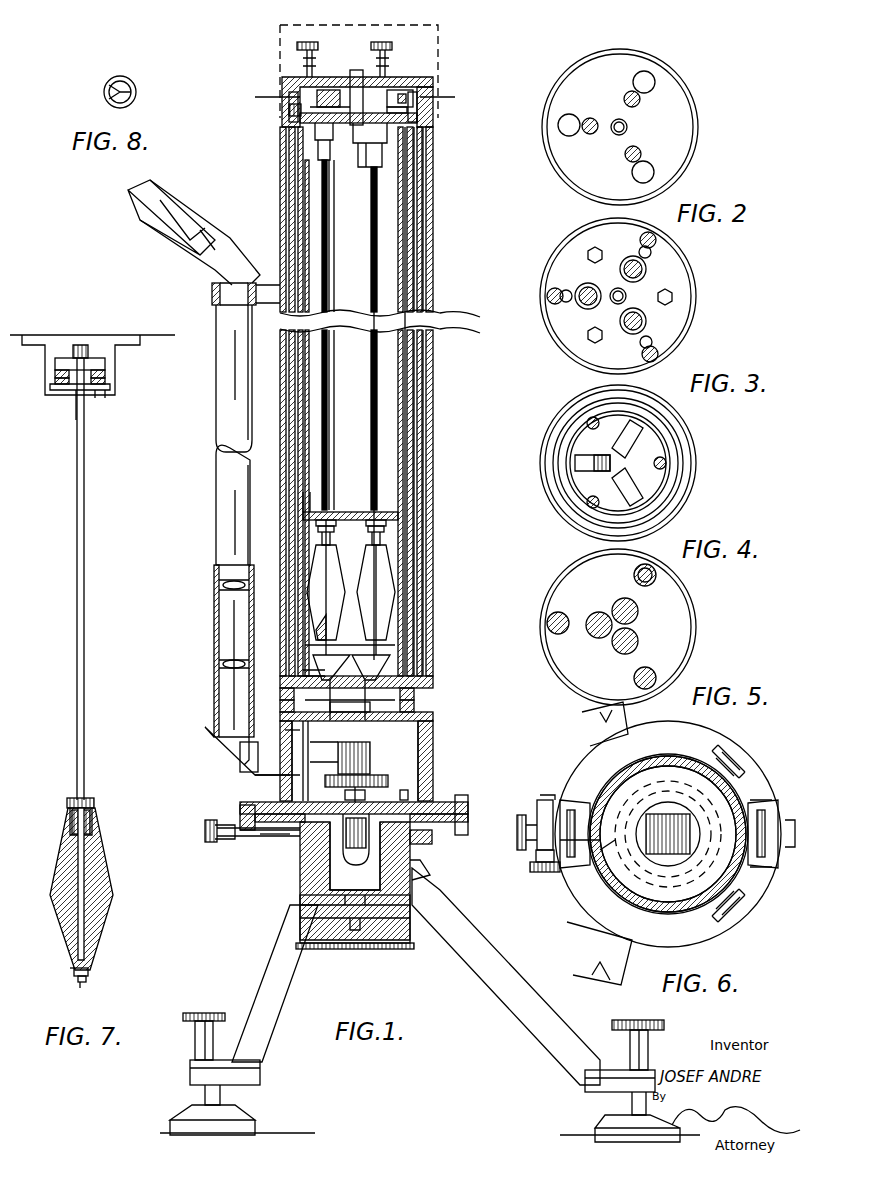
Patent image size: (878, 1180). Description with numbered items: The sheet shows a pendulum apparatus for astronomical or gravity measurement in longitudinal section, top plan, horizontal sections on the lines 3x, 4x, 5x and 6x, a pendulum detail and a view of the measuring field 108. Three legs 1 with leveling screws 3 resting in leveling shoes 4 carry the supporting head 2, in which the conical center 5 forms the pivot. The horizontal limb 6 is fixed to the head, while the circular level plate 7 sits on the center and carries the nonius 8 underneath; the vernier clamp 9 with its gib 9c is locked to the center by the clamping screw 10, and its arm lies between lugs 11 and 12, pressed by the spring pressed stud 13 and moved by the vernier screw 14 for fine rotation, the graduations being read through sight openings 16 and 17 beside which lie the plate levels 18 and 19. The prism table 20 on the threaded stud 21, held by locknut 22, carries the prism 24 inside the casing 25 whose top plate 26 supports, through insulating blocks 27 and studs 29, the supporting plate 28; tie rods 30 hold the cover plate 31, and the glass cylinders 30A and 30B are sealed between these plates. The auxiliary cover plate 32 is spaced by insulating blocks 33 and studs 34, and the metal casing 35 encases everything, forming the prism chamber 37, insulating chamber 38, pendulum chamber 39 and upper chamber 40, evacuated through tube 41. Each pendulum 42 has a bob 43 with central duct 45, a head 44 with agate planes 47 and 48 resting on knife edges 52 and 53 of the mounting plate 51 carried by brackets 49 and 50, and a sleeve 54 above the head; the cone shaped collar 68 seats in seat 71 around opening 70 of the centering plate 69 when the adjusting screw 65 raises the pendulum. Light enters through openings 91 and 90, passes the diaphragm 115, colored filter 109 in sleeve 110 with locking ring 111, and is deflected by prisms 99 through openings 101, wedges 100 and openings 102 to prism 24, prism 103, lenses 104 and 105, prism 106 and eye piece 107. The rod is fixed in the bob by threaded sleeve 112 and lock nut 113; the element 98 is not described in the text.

In FIG. 1, the legs 1 is at (312, 978).
In FIG. 1, the supporting head 2 is at (420, 870).
In FIG. 1, the leveling screw 3 is at (208, 1012).
In FIG. 1, the leveling shoes 4 is at (235, 1112).
In FIG. 1, the conical center 5 is at (330, 880).
In FIG. 1, the horizontal limb 6 is at (266, 822).
In FIG. 6, the horizontal limb 6 is at (580, 810).
In FIG. 1, the circular level plate 7 is at (465, 805).
In FIG. 6, the circular level plate 7 is at (580, 768).
In FIG. 1, the nonius 8 is at (262, 838).
In FIG. 6, the nonius 8 is at (560, 860).
In FIG. 1, the vernier clamp 9 is at (280, 840).
In FIG. 1, the gib 9c is at (240, 800).
In FIG. 1, the clamping screw 10 is at (248, 838).
In FIG. 6, the clamping screw 10 is at (590, 880).
In FIG. 6, the lug 11 is at (540, 812).
In FIG. 6, the lug 12 is at (536, 856).
In FIG. 6, the spring pressed stud 13 is at (520, 820).
In FIG. 6, the vernier screw 14 is at (535, 870).
In FIG. 1, the sight opening 16 is at (250, 798).
In FIG. 6, the sight opening 16 is at (610, 848).
In FIG. 1, the sight opening 17 is at (445, 783).
In FIG. 6, the sight opening 17 is at (765, 800).
In FIG. 6, the plate level 18 is at (740, 760).
In FIG. 6, the plate level 19 is at (745, 905).
In FIG. 1, the prism table 20 is at (400, 770).
In FIG. 6, the prism table 20 is at (672, 795).
In FIG. 1, the central threaded stud 21 is at (340, 830).
In FIG. 1, the locknut 22 is at (365, 796).
In FIG. 1, the prism 24 is at (392, 746).
In FIG. 6, the prism 24 is at (655, 815).
In FIG. 1, the cylindrical shell or casing 25 is at (434, 748).
In FIG. 6, the cylindrical shell or casing 25 is at (690, 770).
In FIG. 1, the plate 26 is at (434, 718).
In FIG. 1, the insulating blocks 27 is at (283, 692).
In FIG. 5, the insulating blocks 27 is at (655, 580).
In FIG. 1, the supporting plate 28 is at (434, 682).
In FIG. 1, the studs 29 is at (283, 706).
In FIG. 5, the studs 29 is at (658, 573).
In FIG. 1, the tie rods 30 is at (410, 560).
In FIG. 3, the tie rods 30 is at (592, 248).
In FIG. 4, the tie rods 30 is at (590, 420).
In FIG. 1, the glass cylinder 30A is at (428, 220).
In FIG. 4, the glass cylinder 30A is at (675, 432).
In FIG. 1, the glass cylinder 30B is at (433, 238).
In FIG. 4, the glass cylinder 30B is at (678, 448).
In FIG. 1, the cover plate 31 is at (292, 120).
In FIG. 1, the auxiliary cover plate 32 is at (285, 80).
In FIG. 1, the insulating blocks 33 is at (290, 95).
In FIG. 3, the insulating blocks 33 is at (658, 240).
In FIG. 1, the studs 34 is at (290, 108).
In FIG. 3, the studs 34 is at (652, 252).
In FIG. 1, the cylindrical metal casing 35 is at (380, 401).
In FIG. 3, the cylindrical metal casing 35 is at (695, 275).
In FIG. 4, the cylindrical metal casing 35 is at (690, 462).
In FIG. 5, the cylindrical metal casing 35 is at (696, 628).
In FIG. 1, the lowermost chamber 37 is at (388, 780).
In FIG. 6, the lowermost chamber 37 is at (600, 760).
In FIG. 1, the heat insulating chamber 38 is at (400, 707).
In FIG. 5, the heat insulating chamber 38 is at (550, 598).
In FIG. 1, the pendulum chamber 39 is at (400, 200).
In FIG. 4, the pendulum chamber 39 is at (660, 425).
In FIG. 1, the fourth chamber 40 is at (430, 104).
In FIG. 3, the fourth chamber 40 is at (590, 340).
In FIG. 1, the tube 41 is at (388, 80).
In FIG. 2, the tube 41 is at (630, 127).
In FIG. 1, the pendulums 42 is at (320, 495).
In FIG. 7, the pendulums 42 is at (84, 670).
In FIG. 1, the pendulum body or bob 43 is at (370, 605).
In FIG. 7, the pendulum body or bob 43 is at (100, 845).
In FIG. 1, the pendulum head 44 is at (385, 153).
In FIG. 7, the pendulum head 44 is at (95, 365).
In FIG. 7, the central duct 45 is at (85, 868).
In FIG. 7, the plane 47 is at (55, 376).
In FIG. 7, the plane 48 is at (105, 382).
In FIG. 7, the bracket 49 is at (105, 374).
In FIG. 7, the bracket 50 is at (45, 360).
In FIG. 7, the knife edge mounting plate 51 is at (74, 395).
In FIG. 7, the knife edge 52 is at (108, 392).
In FIG. 7, the knife edge 53 is at (55, 388).
In FIG. 7, the sleeve 54 is at (88, 348).
In FIG. 1, the adjusting screw 65 is at (300, 62).
In FIG. 2, the adjusting screw 65 is at (560, 124).
In FIG. 3, the adjusting screw 65 is at (645, 330).
In FIG. 1, the cone shaped collar 68 is at (316, 522).
In FIG. 1, the centering plate 69 is at (352, 512).
In FIG. 1, the opening 70 is at (305, 505).
In FIG. 1, the cone shaped seat 71 is at (336, 528).
In FIG. 1, the opening 90 is at (356, 90).
In FIG. 1, the opening 91 is at (330, 88).
In FIG. 2, the opening 91 is at (624, 100).
In FIG. 1, the bolt 98 is at (422, 845).
In FIG. 1, the prisms 99 is at (365, 665).
In FIG. 4, the prisms 99 is at (612, 455).
In FIG. 1, the optical achromatic wedges 100 is at (395, 660).
In FIG. 5, the optical achromatic wedges 100 is at (620, 604).
In FIG. 1, the openings 101 is at (300, 673).
In FIG. 1, the openings 102 is at (285, 745).
In FIG. 1, the prism 103 is at (225, 750).
In FIG. 1, the achromatic lens 104 is at (214, 663).
In FIG. 1, the achromatic lens 105 is at (214, 583).
In FIG. 1, the prism 106 is at (212, 278).
In FIG. 1, the eye piece 107 is at (165, 205).
In FIG. 1, the measuring field 108 is at (220, 232).
In FIG. 8, the measuring field 108 is at (137, 92).
In FIG. 7, the colored light filter 109 is at (92, 972).
In FIG. 7, the sleeve 110 is at (88, 980).
In FIG. 7, the locking ring 111 is at (78, 984).
In FIG. 7, the threaded sleeve 112 is at (92, 820).
In FIG. 7, the lock nut 113 is at (92, 800).
In FIG. 7, the diaphragm 115 is at (72, 970).
In FIG. 1, the section line 3x— 3x is at (354, 97).
In FIG. 1, the section line 4x— 4x is at (370, 645).
In FIG. 1, the section line 5x— 5x is at (365, 702).
In FIG. 1, the section line 6x— 6x is at (434, 730).